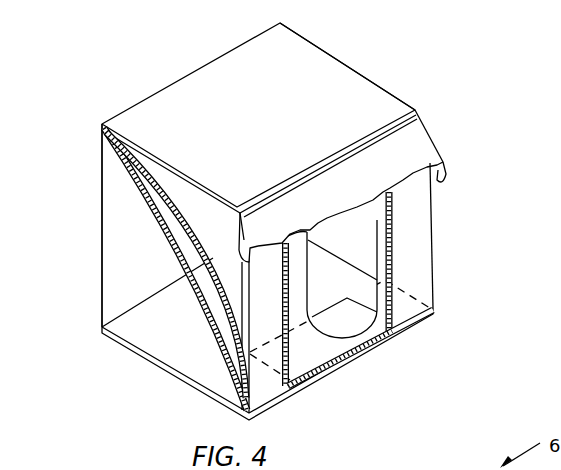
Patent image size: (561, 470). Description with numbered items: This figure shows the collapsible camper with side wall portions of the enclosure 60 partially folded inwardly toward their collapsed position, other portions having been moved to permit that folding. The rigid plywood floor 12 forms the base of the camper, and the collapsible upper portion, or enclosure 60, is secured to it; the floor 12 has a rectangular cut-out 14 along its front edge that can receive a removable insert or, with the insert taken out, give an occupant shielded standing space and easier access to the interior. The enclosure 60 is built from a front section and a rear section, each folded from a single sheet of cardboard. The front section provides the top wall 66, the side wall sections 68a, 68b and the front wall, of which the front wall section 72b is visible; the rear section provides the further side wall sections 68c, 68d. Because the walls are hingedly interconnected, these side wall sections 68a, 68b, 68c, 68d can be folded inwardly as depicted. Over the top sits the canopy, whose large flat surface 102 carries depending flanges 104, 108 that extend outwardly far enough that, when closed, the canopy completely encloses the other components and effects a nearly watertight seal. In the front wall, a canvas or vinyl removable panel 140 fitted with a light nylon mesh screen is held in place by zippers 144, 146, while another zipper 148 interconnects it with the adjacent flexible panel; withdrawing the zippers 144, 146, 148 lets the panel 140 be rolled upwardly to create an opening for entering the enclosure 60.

The collapsible upper portion 60 is at (408, 38).
The top wall 66 is at (298, 53).
The side wall section 68a is at (170, 187).
The side wall section 68b is at (236, 283).
The side wall section 68c is at (110, 242).
The side wall section 68d is at (203, 365).
The floor 12 is at (130, 349).
The cut-out section 14 is at (342, 297).
The front wall section 72b is at (418, 260).
The flat surface 102 is at (415, 138).
The depending flange 104 is at (243, 233).
The depending flange 108 is at (437, 186).
The removable panel 140 is at (365, 312).
The zipper 144 is at (284, 301).
The zipper 146 is at (393, 245).
The zipper 148 is at (371, 349).